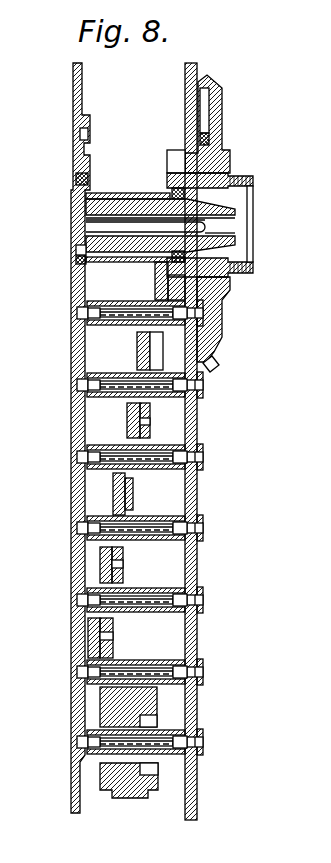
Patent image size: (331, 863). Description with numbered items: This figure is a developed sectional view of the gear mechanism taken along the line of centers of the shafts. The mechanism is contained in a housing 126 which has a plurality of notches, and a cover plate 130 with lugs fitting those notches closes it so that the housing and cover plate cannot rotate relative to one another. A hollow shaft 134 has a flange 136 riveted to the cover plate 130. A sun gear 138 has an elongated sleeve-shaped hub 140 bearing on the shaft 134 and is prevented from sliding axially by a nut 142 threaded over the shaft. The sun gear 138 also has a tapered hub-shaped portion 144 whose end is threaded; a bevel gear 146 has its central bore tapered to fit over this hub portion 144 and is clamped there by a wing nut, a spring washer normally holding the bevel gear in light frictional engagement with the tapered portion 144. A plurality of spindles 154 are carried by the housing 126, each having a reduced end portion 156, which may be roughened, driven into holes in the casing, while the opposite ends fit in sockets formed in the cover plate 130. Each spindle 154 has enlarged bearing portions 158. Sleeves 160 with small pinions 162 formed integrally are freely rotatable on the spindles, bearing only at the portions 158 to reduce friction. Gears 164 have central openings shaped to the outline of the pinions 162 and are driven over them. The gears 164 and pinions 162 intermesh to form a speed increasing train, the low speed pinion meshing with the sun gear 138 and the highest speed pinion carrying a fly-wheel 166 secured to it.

The housing 126 is at (200, 498).
The cover plate 130 is at (72, 497).
The hollow shaft 134 is at (100, 212).
The flange 136 is at (79, 252).
The sun gear 138 is at (177, 153).
The sleeve-shaped hub 140 is at (122, 194).
The nut 142 is at (163, 190).
The tapered hub-shaped portion 144 is at (217, 190).
The bevel gear 146 is at (207, 357).
The spindles 154 is at (118, 314).
The reduced end portion 156 is at (93, 670).
The enlarged bearing portions 158 is at (178, 667).
The sleeves 160 is at (150, 520).
The pinions 162 is at (130, 552).
The gears 164 is at (155, 280).
The fly-wheel 166 is at (137, 790).